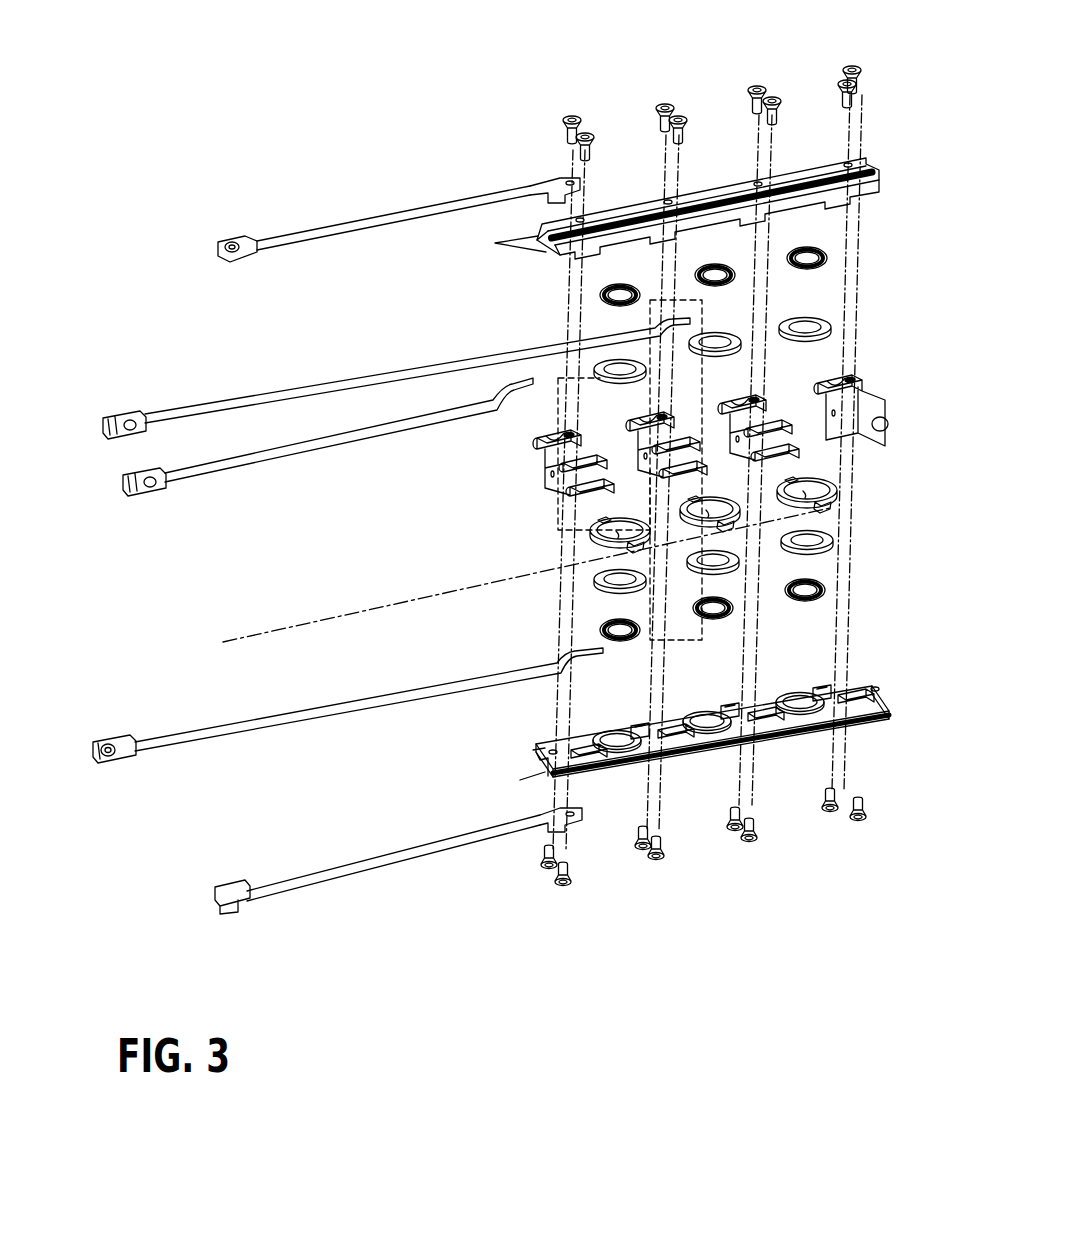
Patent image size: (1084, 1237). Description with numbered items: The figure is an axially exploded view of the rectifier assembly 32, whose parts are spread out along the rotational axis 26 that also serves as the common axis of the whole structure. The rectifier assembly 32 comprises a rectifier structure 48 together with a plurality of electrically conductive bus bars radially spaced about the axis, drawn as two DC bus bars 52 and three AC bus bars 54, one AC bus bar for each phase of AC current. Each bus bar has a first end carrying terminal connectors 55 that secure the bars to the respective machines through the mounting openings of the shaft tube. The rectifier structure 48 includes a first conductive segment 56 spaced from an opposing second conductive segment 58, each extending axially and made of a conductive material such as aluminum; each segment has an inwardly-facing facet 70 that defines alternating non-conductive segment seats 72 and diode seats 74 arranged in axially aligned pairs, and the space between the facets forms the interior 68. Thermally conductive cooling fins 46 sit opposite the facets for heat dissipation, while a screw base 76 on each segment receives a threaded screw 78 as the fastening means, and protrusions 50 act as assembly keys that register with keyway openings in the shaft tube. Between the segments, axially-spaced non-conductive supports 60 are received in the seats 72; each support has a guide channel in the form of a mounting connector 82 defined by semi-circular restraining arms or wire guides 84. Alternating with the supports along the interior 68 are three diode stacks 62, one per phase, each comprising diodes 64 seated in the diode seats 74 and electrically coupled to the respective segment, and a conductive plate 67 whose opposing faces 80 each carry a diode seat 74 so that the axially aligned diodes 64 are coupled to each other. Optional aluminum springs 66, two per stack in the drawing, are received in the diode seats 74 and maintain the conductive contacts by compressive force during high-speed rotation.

The rotational axis 26 is at (320, 622).
The rectifier assembly 32 is at (356, 51).
The cooling fins 46 is at (506, 511).
The rectifier structure 48 is at (722, 188).
The protrusions 50 is at (886, 424).
The DC bus bars 52 is at (358, 213).
The AC bus bars 54 is at (320, 437).
The terminal connectors 55 is at (240, 241).
The first conductive segment 56 is at (792, 172).
The second conductive segment 58 is at (763, 746).
The non-conductive supports 60 is at (693, 419).
The diode stack 62 is at (640, 282).
The diodes 64 is at (612, 366).
The spring 66 is at (616, 292).
The conductive plates 67 is at (705, 510).
The interior 68 is at (711, 746).
The inwardly-facing facet 70 is at (553, 256).
The non-conductive segment seats 72 is at (593, 763).
The diode seats 74 is at (690, 512).
The screw base 76 is at (566, 445).
The threaded screw 78 is at (580, 137).
The faces 80 is at (630, 545).
The mounting connector 82 is at (558, 505).
The wire guides 84 is at (545, 462).